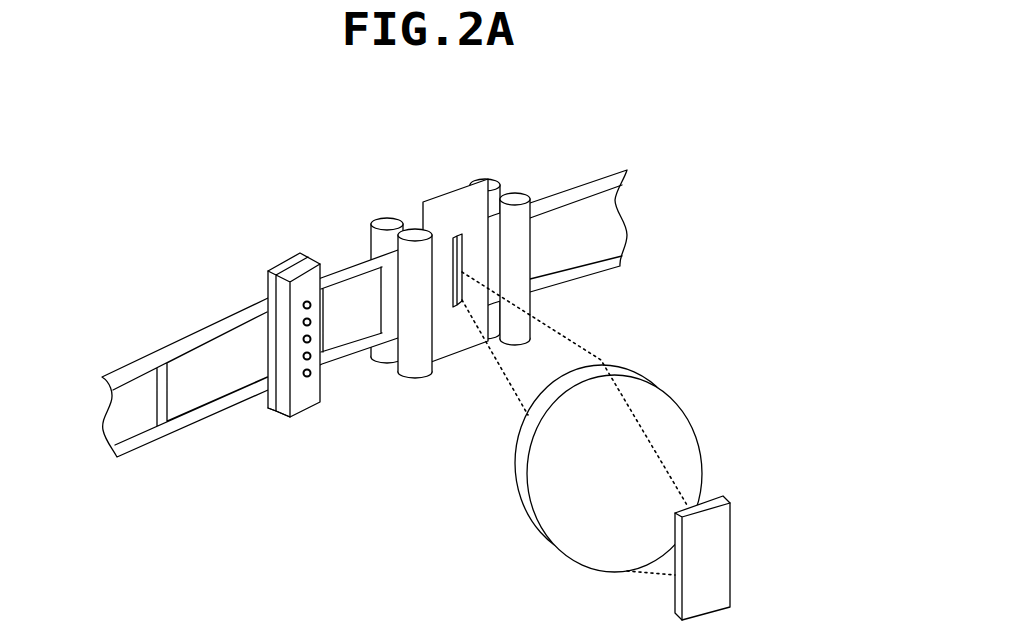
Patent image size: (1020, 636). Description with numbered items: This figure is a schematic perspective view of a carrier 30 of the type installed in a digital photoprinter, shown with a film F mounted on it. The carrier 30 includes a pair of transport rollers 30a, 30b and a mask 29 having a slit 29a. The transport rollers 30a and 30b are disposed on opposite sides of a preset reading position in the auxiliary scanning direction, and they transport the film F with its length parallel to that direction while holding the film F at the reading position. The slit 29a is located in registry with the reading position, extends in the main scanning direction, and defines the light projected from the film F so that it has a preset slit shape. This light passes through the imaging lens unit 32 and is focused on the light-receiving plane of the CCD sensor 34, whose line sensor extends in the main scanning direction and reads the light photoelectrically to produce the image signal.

The carrier 30 is at (409, 288).
The transport roller 30a is at (412, 362).
The transport roller 30b is at (513, 273).
The mask 29 is at (481, 268).
The slit 29a is at (457, 236).
The imaging lens unit 32 is at (657, 405).
The CCD sensor 34 is at (715, 550).
The film F is at (558, 173).